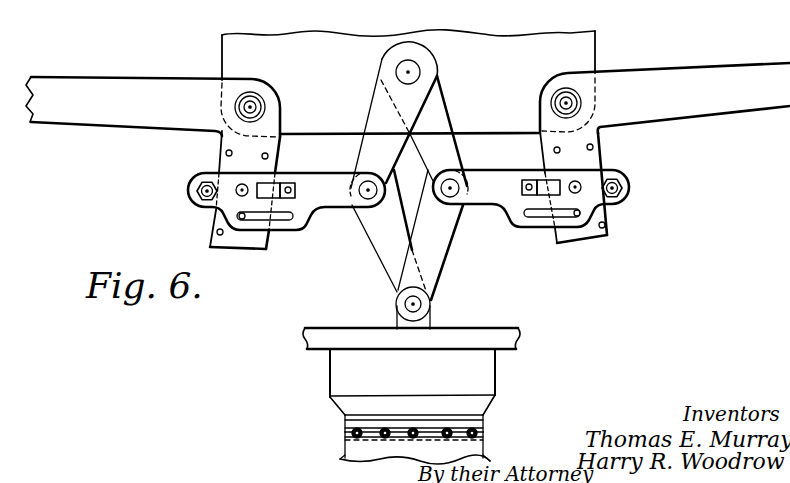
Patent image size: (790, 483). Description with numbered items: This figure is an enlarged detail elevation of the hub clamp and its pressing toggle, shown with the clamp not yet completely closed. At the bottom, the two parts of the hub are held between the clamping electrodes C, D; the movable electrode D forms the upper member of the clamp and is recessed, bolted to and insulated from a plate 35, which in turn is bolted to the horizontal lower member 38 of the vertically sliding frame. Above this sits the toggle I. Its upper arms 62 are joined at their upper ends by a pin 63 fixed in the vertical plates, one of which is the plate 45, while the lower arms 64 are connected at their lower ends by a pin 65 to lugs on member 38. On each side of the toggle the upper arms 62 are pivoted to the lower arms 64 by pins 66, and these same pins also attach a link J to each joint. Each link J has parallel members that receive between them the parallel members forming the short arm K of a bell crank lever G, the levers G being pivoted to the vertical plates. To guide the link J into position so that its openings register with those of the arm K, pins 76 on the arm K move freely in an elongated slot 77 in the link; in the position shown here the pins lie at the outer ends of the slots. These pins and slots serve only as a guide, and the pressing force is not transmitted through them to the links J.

The bell crank lever G is at (408, 92).
The vertical plate 45 is at (537, 60).
The short arm of bell crank lever K is at (267, 250).
The link J is at (429, 208).
The pin 76 is at (581, 212).
The elongated slot 77 is at (538, 218).
The toggle I is at (419, 165).
The upper arm 62 is at (372, 108).
The pin 63 is at (409, 71).
The pin 66 is at (370, 188).
The lower arm 64 is at (384, 270).
The pin 65 is at (413, 304).
The horizontal lower member 38 is at (427, 340).
The plate 35 is at (496, 370).
The movable electrode D is at (345, 417).
The electrode C is at (338, 450).